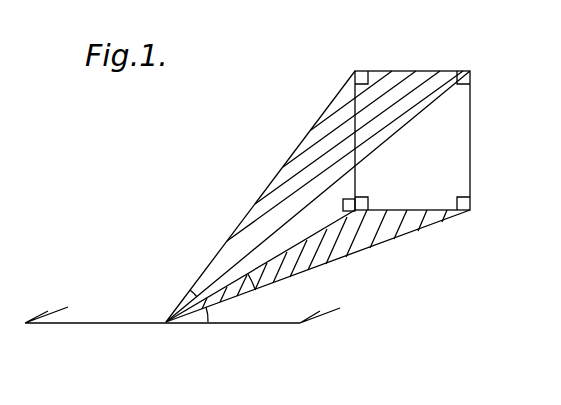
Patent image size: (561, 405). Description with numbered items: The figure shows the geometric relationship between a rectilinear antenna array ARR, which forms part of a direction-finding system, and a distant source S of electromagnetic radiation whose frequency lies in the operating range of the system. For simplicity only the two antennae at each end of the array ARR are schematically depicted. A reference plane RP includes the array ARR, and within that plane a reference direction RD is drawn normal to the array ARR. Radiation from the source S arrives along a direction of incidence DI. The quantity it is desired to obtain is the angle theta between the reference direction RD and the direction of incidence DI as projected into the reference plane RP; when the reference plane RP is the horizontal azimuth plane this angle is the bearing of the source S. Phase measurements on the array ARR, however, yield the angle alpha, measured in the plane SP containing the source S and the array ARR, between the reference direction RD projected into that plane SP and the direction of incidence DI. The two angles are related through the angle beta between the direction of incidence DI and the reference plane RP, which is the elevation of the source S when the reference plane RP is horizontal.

The antenna array ARR is at (118, 324).
The source S is at (416, 130).
The plane of the source and the array SP is at (392, 84).
The direction of incidence DI is at (430, 106).
The reference plane RP is at (343, 241).
The reference direction RD is at (328, 217).